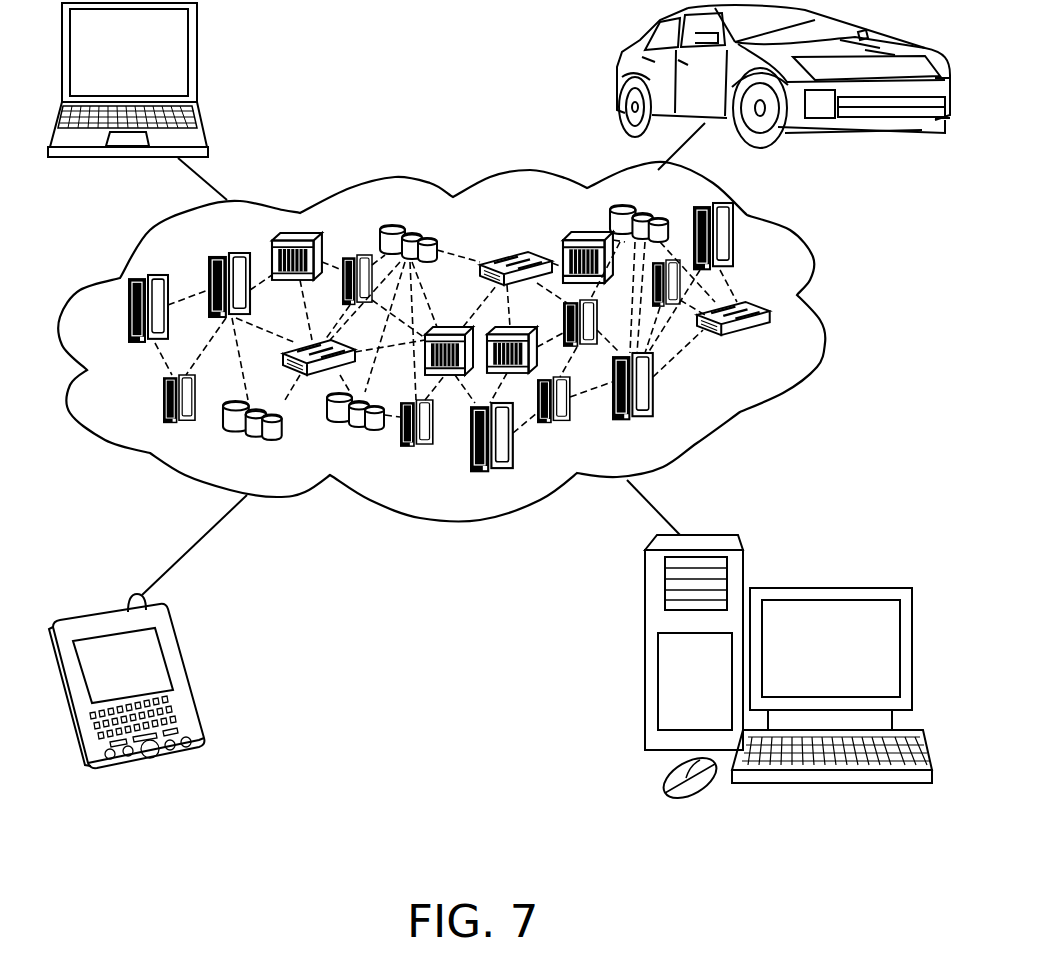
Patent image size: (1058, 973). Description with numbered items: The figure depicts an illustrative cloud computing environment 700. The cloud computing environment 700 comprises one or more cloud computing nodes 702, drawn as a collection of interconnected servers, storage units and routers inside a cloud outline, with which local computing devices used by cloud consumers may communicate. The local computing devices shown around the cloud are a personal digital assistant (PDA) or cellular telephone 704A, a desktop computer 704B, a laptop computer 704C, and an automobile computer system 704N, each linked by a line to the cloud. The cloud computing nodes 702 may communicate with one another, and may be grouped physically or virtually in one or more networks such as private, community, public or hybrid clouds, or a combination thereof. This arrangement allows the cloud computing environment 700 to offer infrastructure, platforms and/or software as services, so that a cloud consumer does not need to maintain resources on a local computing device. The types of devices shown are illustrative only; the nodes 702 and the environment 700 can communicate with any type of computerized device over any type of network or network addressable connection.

The cloud computing environment 700 is at (780, 313).
The cloud computing nodes 702 is at (772, 345).
The personal digital assistant (PDA) or cellular telephone 704A is at (176, 646).
The desktop computer 704B is at (817, 588).
The laptop computer 704C is at (195, 38).
The automobile computer system 704N is at (618, 78).